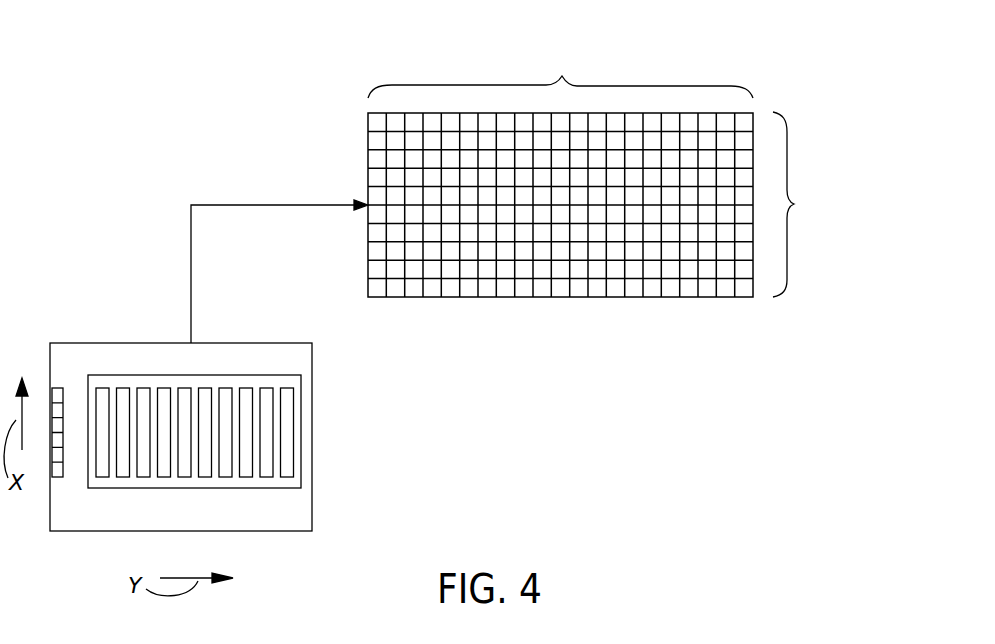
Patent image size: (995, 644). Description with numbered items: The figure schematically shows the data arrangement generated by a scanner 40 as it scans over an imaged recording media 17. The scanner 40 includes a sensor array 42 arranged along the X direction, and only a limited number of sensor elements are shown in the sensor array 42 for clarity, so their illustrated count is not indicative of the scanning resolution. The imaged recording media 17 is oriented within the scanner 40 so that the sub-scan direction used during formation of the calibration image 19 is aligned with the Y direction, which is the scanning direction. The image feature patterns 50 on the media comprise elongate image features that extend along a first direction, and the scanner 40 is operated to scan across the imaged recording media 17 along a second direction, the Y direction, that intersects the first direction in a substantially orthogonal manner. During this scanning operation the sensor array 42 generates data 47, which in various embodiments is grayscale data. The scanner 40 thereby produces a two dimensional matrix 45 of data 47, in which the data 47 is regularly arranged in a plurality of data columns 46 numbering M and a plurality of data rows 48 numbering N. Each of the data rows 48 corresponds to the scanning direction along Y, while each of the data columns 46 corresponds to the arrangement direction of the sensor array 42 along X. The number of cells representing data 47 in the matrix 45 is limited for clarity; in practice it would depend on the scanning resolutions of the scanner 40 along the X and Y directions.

The imaged recording media 17 is at (290, 490).
The calibration image 19 is at (300, 413).
The scanner 40 is at (308, 358).
The sensor array 42 is at (58, 388).
The two dimensional matrix 45 is at (500, 305).
The data columns 46 is at (562, 76).
The data 47 is at (740, 140).
The data rows 48 is at (794, 204).
The image feature patterns 50 is at (143, 400).